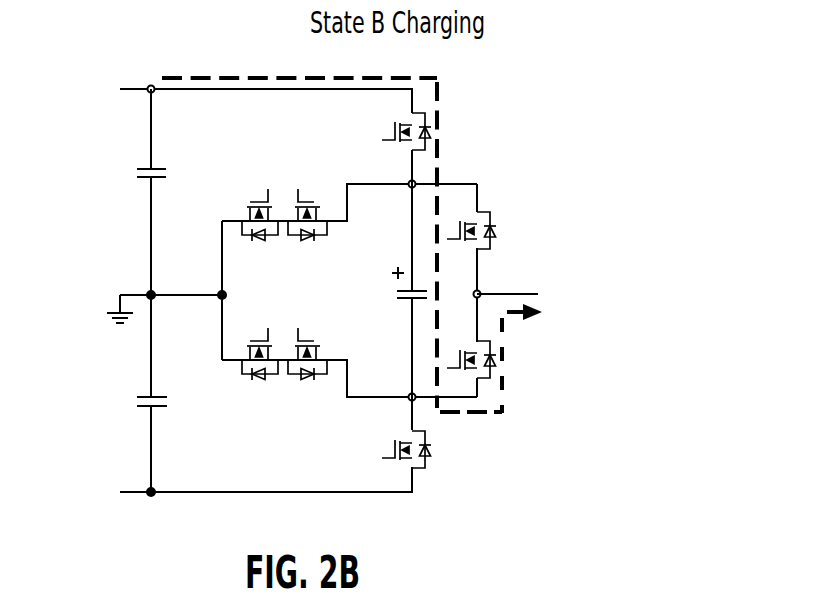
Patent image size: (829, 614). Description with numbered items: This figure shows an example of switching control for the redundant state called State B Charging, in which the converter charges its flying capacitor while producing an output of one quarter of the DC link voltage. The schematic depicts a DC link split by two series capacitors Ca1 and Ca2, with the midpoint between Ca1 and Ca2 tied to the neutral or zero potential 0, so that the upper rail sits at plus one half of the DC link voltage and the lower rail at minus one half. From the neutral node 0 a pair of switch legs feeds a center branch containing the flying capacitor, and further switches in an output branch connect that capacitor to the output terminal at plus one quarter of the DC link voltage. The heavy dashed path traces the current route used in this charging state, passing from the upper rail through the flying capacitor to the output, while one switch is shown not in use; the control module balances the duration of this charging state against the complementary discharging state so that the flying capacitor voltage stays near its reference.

The upper DC-link capacitor Ca1 is at (133, 192).
The lower DC-link capacitor Ca2 is at (135, 393).
The neutral (zero) potential node with ground 0 is at (163, 297).